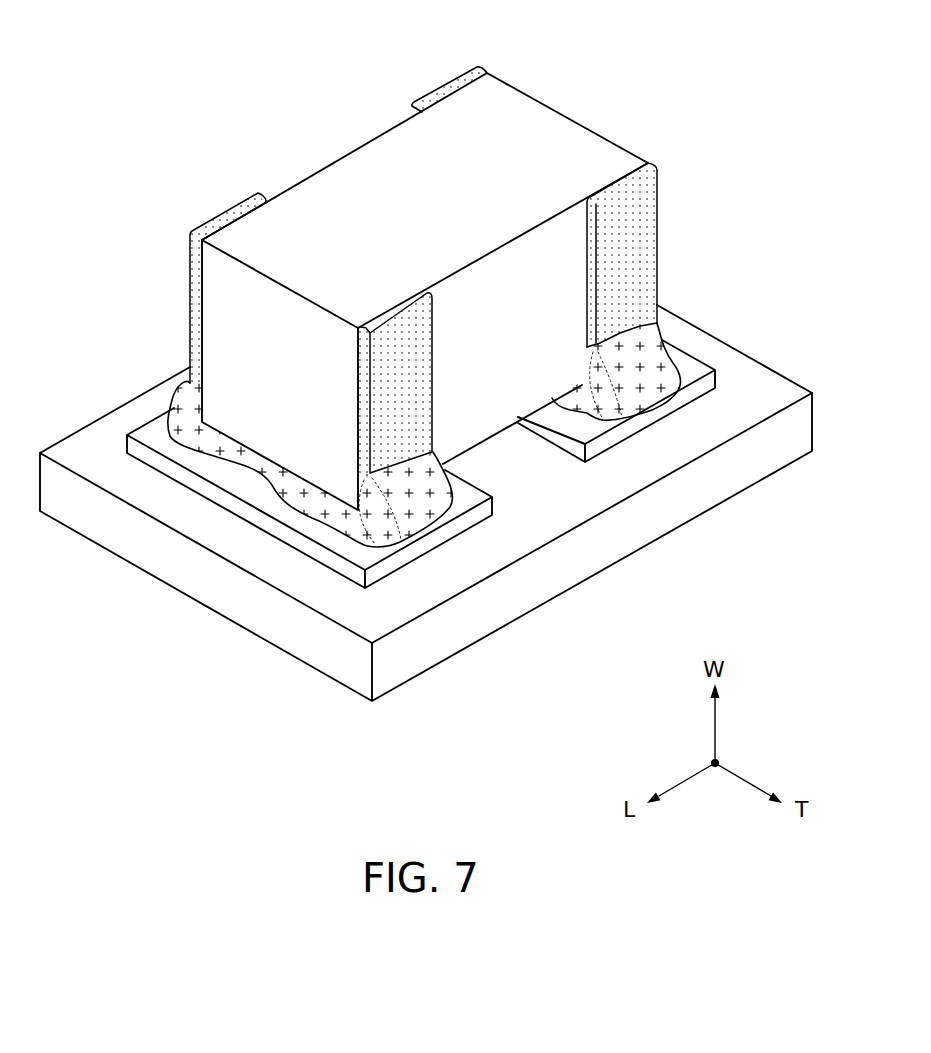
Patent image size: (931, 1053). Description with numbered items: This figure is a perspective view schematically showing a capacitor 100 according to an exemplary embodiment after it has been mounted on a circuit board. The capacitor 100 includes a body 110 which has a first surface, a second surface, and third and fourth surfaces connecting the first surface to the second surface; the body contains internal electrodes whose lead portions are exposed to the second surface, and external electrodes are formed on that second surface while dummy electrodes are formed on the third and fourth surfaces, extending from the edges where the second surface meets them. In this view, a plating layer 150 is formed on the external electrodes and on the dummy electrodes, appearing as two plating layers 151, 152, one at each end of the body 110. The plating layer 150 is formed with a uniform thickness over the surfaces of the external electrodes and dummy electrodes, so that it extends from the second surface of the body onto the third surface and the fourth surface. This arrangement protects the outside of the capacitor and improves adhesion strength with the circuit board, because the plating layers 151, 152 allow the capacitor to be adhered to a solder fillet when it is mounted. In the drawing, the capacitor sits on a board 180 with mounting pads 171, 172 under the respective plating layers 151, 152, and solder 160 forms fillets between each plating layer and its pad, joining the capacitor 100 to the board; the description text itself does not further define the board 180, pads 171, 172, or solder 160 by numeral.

The capacitor 100 is at (486, 266).
The body 110 is at (347, 207).
The plating layer 150 is at (486, 256).
The plating layer 151 is at (413, 350).
The plating layer 152 is at (642, 208).
The solder 160 is at (425, 498).
The first electrode pad 171 is at (398, 562).
The second electrode pad 172 is at (618, 435).
The printed circuit board (substrate) 180 is at (200, 583).